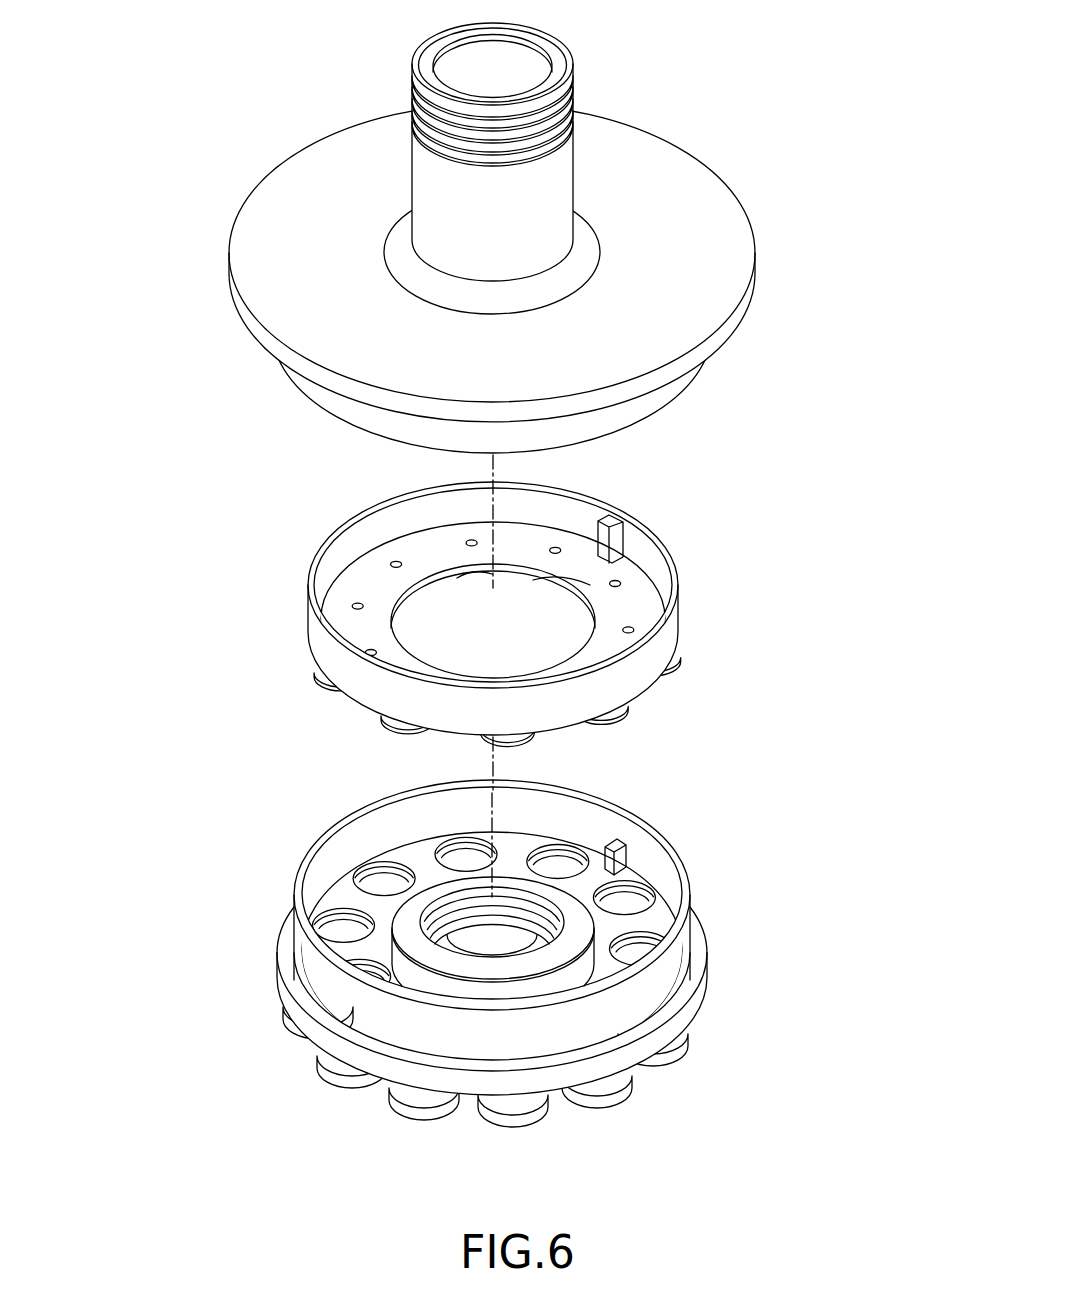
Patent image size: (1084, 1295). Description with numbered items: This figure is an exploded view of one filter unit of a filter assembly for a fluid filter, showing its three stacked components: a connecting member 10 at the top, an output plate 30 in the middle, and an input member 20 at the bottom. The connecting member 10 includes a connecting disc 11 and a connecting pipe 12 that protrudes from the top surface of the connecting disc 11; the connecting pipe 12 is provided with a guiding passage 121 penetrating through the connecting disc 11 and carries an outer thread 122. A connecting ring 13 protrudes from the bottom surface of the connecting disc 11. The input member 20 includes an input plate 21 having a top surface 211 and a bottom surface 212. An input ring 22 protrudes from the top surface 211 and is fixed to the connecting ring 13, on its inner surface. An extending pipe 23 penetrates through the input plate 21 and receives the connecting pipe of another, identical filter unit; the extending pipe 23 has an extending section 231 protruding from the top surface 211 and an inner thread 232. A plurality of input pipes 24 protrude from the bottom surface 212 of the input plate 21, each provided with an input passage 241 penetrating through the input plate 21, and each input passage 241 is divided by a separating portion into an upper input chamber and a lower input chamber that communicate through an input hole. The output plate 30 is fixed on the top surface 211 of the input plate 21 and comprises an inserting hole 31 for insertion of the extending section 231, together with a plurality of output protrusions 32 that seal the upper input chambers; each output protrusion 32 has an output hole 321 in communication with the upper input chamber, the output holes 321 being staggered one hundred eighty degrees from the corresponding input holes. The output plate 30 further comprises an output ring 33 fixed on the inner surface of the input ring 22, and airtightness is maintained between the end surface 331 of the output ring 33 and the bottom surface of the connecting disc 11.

The connecting member 10 is at (520, 238).
The connecting disc 11 is at (732, 218).
The connecting pipe 12 is at (477, 158).
The guiding passage 121 is at (457, 60).
The outer thread 122 is at (567, 104).
The connecting ring 13 is at (665, 397).
The output plate 30 is at (503, 606).
The inserting hole 31 is at (567, 585).
The output protrusions 32 is at (327, 687).
The output hole 321 is at (398, 567).
The output ring 33 is at (315, 625).
The end surface 331 is at (335, 533).
The input member 20 is at (532, 953).
The input plate 21 is at (675, 1023).
The top surface 211 is at (697, 952).
The bottom surface 212 is at (645, 1060).
The input ring 22 is at (607, 805).
The extending pipe 23 is at (451, 946).
The extending section 231 is at (403, 960).
The inner thread 232 is at (440, 905).
The input pipes 24 is at (542, 1108).
The input passage 241 is at (345, 927).